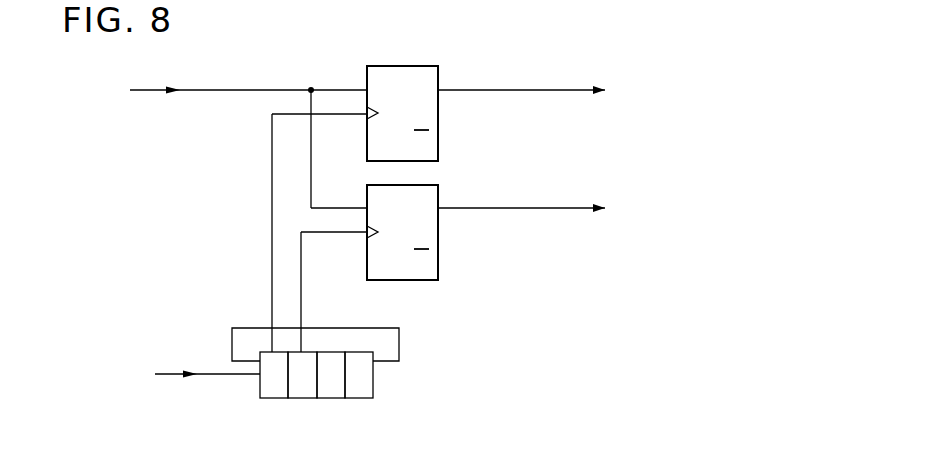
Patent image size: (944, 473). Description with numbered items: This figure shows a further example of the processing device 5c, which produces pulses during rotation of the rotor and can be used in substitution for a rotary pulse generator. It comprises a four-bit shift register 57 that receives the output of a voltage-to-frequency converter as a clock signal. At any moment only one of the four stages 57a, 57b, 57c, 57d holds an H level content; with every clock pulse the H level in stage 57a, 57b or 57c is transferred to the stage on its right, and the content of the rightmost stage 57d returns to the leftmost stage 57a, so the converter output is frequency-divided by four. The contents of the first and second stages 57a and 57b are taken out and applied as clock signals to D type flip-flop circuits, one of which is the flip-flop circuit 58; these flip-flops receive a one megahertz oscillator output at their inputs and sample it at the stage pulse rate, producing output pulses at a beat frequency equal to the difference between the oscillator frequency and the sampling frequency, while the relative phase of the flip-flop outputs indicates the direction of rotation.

The processing device 5c is at (293, 63).
The D type flip-flop circuit 58 is at (438, 150).
The four-bit shift register 57 is at (438, 268).
The first stage 57a is at (268, 398).
The second stage 57b is at (305, 398).
The third stage 57c is at (333, 398).
The rightmost stage 57d is at (363, 398).